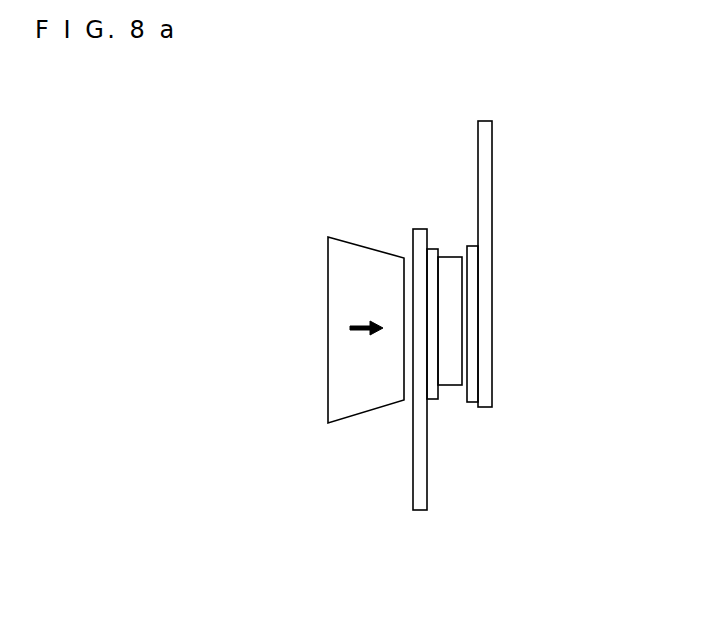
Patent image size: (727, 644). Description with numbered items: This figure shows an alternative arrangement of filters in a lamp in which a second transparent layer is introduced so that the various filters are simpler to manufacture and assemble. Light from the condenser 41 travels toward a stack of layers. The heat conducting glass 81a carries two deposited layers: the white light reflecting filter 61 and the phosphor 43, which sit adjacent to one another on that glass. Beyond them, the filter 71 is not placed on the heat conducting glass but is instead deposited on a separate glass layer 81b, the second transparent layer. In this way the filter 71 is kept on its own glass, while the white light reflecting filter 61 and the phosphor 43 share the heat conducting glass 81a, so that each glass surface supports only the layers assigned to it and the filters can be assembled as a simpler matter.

The condenser 41 is at (328, 258).
The phosphor 43 is at (450, 280).
The white light reflecting filter 61 is at (432, 395).
The filter 71 is at (475, 392).
The heat conducting glass 81a is at (423, 500).
The separate glass layer 81b is at (485, 140).